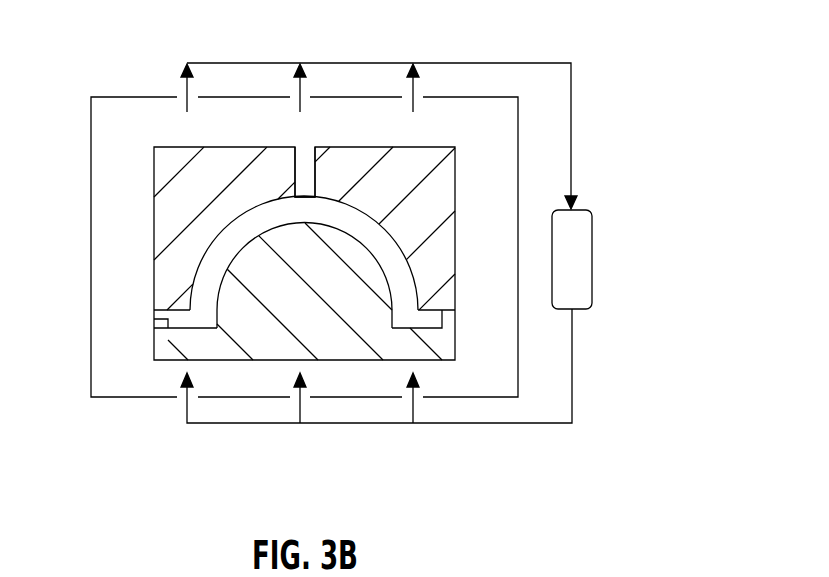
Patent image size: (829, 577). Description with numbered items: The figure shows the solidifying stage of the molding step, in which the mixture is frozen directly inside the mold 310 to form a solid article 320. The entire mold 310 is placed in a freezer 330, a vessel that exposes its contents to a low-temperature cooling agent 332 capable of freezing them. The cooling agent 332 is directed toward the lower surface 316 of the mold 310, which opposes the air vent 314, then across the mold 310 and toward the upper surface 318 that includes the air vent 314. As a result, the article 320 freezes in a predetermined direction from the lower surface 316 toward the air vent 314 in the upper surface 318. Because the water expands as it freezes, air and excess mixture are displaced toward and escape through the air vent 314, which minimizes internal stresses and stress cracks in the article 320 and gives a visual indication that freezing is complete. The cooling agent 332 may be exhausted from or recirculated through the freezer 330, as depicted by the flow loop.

The mold 310 is at (456, 256).
The air vent 314 is at (303, 172).
The lower surface 316 is at (167, 360).
The upper surface 318 is at (169, 147).
The solid article 320 is at (178, 320).
The freezer 330 is at (91, 305).
The cooling agent 332 is at (592, 256).